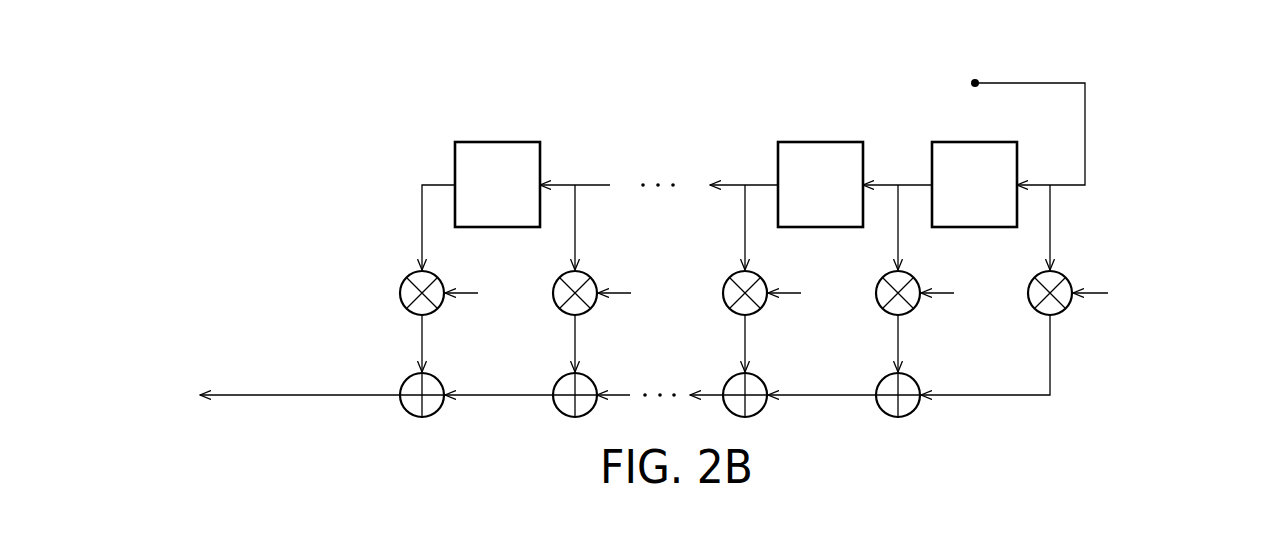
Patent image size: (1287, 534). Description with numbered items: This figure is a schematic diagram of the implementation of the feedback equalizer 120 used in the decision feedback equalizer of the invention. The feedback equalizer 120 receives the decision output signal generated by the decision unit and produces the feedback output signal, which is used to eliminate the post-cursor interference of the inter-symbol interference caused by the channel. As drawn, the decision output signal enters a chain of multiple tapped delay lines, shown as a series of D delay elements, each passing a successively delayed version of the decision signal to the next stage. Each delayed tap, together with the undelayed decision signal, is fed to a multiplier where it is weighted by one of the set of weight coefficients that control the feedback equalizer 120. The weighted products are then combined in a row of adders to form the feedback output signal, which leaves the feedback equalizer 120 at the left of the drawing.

The feedback equalizer 120 is at (1148, 47).